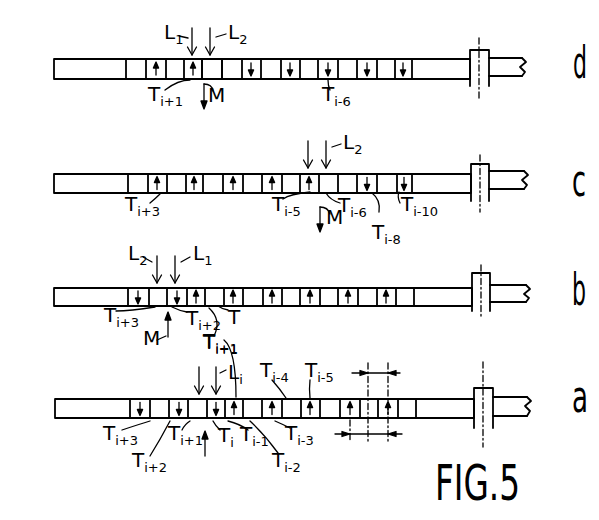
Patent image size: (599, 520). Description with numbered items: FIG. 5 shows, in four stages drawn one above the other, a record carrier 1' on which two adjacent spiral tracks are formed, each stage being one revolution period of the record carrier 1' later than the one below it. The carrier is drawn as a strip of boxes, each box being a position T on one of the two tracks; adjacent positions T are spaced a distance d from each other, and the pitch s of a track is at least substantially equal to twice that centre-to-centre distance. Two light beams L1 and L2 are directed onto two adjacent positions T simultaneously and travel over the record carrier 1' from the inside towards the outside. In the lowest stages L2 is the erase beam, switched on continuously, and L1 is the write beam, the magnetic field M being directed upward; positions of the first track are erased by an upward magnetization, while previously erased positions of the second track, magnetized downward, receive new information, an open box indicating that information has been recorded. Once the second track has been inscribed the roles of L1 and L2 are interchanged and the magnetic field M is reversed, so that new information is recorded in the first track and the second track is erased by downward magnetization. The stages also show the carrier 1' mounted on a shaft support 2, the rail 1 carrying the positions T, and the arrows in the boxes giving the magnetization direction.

The record carrier 1' is at (275, 406).
The measuring bar 1 is at (273, 69).
The bearing support 2 is at (485, 440).
The position T is at (216, 81).
The light beam L1 is at (304, 148).
The light beam L2 is at (190, 373).
The magnetic field M is at (204, 456).
The distance d is at (376, 395).
The pitch s is at (368, 440).